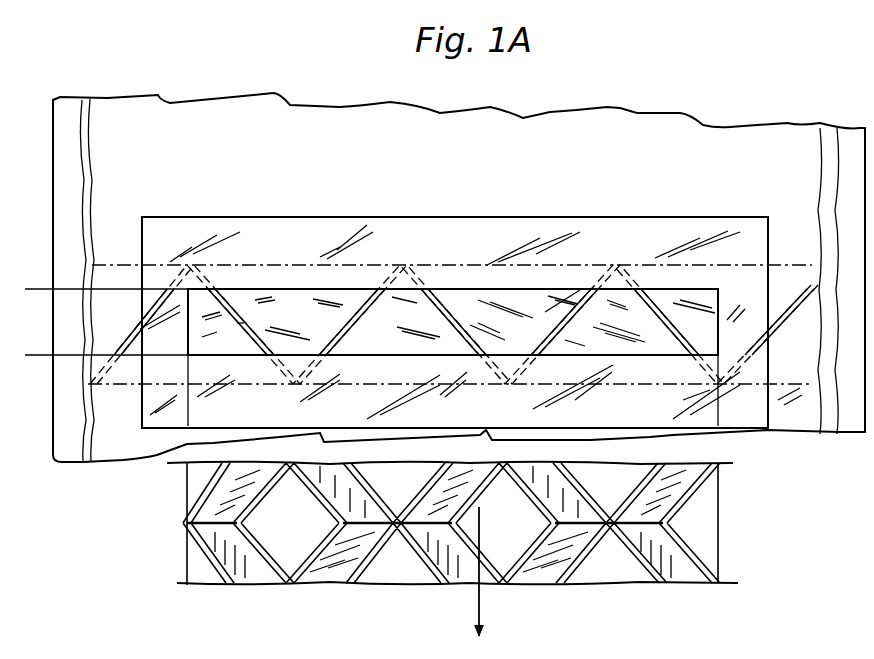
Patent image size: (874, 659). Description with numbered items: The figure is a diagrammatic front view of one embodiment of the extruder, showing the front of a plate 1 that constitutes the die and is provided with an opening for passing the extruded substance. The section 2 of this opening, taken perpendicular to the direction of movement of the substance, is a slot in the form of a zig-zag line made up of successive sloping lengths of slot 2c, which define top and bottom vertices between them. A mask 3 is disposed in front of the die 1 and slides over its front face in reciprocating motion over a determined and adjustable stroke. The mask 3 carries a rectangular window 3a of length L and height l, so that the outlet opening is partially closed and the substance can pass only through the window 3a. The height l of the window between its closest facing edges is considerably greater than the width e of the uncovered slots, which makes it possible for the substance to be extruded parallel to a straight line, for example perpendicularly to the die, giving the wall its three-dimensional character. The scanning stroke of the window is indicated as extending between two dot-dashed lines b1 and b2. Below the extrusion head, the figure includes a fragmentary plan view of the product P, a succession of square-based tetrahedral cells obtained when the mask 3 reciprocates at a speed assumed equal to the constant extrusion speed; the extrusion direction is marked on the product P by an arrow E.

The plate 1 is at (733, 138).
The section of the opening 2 is at (426, 279).
The sloping lengths of slot 2c is at (647, 305).
The mask 3 is at (297, 217).
The rectangular window 3a is at (712, 288).
The dot-dashed line b1 is at (110, 264).
The dot-dashed line b2 is at (792, 386).
The width of the uncovered slots e is at (222, 340).
The height of the window l is at (28, 290).
The length of the window L is at (189, 408).
The product P is at (180, 526).
The arrow E is at (493, 571).